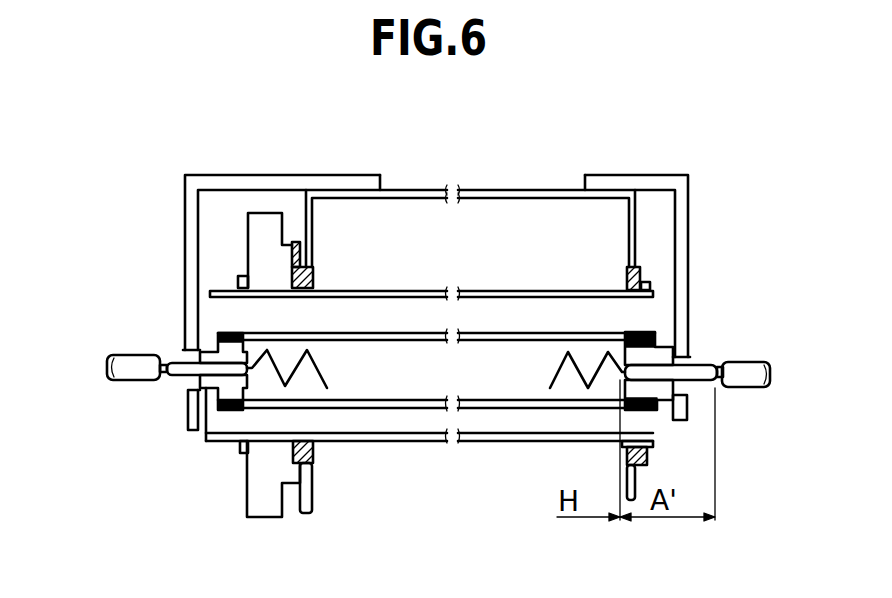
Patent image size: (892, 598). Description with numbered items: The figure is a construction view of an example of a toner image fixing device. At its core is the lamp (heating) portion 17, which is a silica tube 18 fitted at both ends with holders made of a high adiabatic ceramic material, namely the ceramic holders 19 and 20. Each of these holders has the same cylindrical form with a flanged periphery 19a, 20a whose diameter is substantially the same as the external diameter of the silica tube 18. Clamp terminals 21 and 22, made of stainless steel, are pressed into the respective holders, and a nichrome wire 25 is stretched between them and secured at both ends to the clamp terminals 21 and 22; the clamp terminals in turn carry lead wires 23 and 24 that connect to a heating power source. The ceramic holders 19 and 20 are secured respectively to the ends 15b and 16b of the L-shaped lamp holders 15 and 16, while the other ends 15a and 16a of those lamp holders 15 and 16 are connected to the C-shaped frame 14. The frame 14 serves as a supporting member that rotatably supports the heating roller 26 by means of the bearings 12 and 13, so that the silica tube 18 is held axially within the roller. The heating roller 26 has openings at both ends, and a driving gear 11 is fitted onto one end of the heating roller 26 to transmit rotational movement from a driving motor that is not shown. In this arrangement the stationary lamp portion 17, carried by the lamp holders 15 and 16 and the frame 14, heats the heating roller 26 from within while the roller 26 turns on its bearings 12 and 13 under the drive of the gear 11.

The driving gear 11 is at (250, 487).
The bearing 12 is at (312, 457).
The bearing 13 is at (647, 463).
The frame 14 is at (437, 190).
The lamp holder 15 is at (185, 220).
The other end of lamp holder 15a is at (373, 177).
The end of lamp holder 15b is at (186, 340).
The lamp holder 16 is at (690, 230).
The other end of lamp holder 16a is at (598, 177).
The end of lamp holder 16b is at (690, 345).
The lamp portion 17 is at (542, 332).
The silica tube 18 is at (480, 399).
The ceramic holder 19 is at (206, 441).
The periphery 19a is at (218, 333).
The ceramic holder 20 is at (662, 414).
The periphery 20a is at (680, 345).
The clamp terminal 21 is at (169, 378).
The clamp terminal 22 is at (701, 370).
The lead wire 23 is at (127, 382).
The lead wire 24 is at (758, 388).
The nichrome wire 25 is at (555, 372).
The heating roller 26 is at (463, 446).